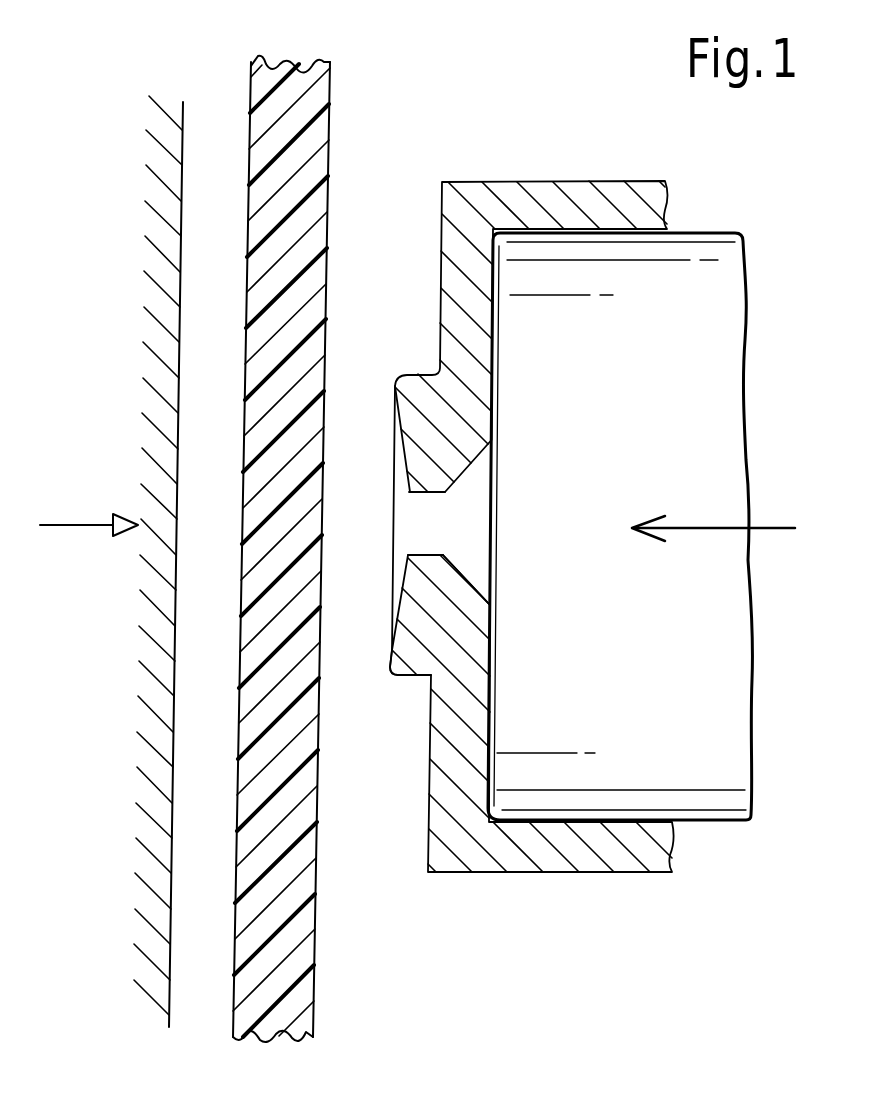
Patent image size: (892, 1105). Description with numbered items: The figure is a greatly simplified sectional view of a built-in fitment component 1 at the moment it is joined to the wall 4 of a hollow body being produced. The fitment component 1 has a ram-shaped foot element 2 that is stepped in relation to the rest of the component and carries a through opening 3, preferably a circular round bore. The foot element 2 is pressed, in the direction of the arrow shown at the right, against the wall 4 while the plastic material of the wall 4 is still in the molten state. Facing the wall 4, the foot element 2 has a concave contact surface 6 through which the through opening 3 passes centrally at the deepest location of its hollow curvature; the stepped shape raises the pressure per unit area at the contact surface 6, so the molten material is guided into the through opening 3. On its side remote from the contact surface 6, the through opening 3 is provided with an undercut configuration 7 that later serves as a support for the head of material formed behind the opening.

The built-in fitment component 1 is at (600, 158).
The foot element 2 is at (398, 663).
The through opening 3 is at (425, 517).
The wall 4 is at (290, 898).
The concave contact surface 6 is at (402, 450).
The undercut configuration 7 is at (463, 574).